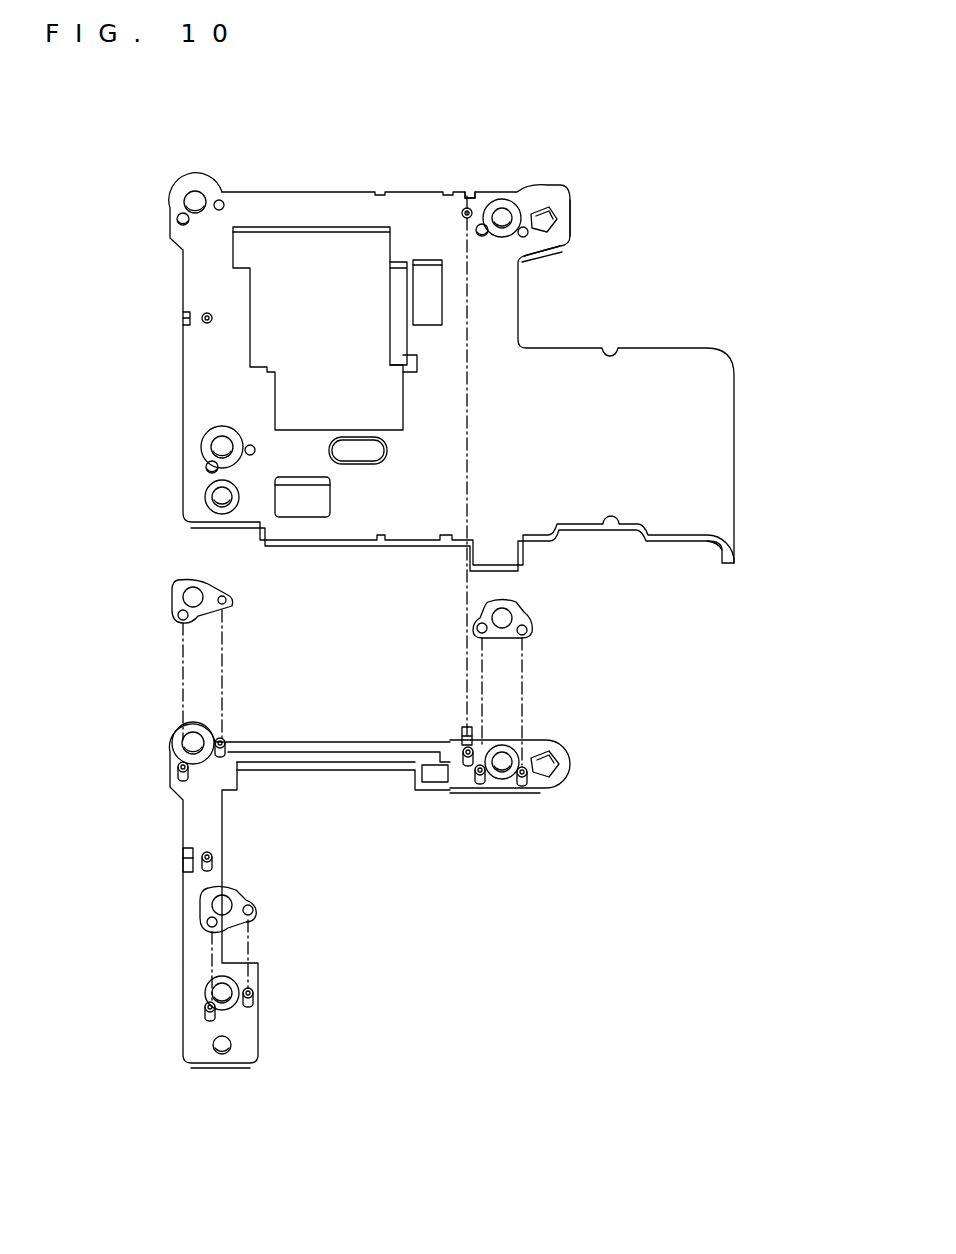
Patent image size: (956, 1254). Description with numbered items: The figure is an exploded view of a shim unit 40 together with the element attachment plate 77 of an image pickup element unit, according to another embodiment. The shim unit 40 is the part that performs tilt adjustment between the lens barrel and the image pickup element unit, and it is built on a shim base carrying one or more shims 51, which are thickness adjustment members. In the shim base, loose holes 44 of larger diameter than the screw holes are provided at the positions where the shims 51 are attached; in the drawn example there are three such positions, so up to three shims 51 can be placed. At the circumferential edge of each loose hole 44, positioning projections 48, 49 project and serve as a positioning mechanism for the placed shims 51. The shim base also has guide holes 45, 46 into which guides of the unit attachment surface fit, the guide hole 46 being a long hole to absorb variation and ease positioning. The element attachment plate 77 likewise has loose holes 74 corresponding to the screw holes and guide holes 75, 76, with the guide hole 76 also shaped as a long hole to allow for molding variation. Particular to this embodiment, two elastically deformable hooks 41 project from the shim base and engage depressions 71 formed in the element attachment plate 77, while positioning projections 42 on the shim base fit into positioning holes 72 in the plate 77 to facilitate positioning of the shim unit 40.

The shim unit 40 is at (775, 594).
The elastically deformable hook 41 is at (470, 728).
The positioning projection 42 is at (456, 790).
The loose hole 44 is at (183, 740).
The guide hole 45 is at (210, 1047).
The guide hole 46 is at (560, 770).
The positioning projection 48 is at (183, 767).
The positioning projection 49 is at (222, 742).
The shim 51 is at (165, 605).
The depression 71 is at (470, 192).
The positioning hole 72 is at (460, 213).
The loose hole 74 is at (195, 190).
The guide hole 75 is at (213, 497).
The guide hole 76 is at (570, 205).
The element attachment plate 77 is at (760, 340).